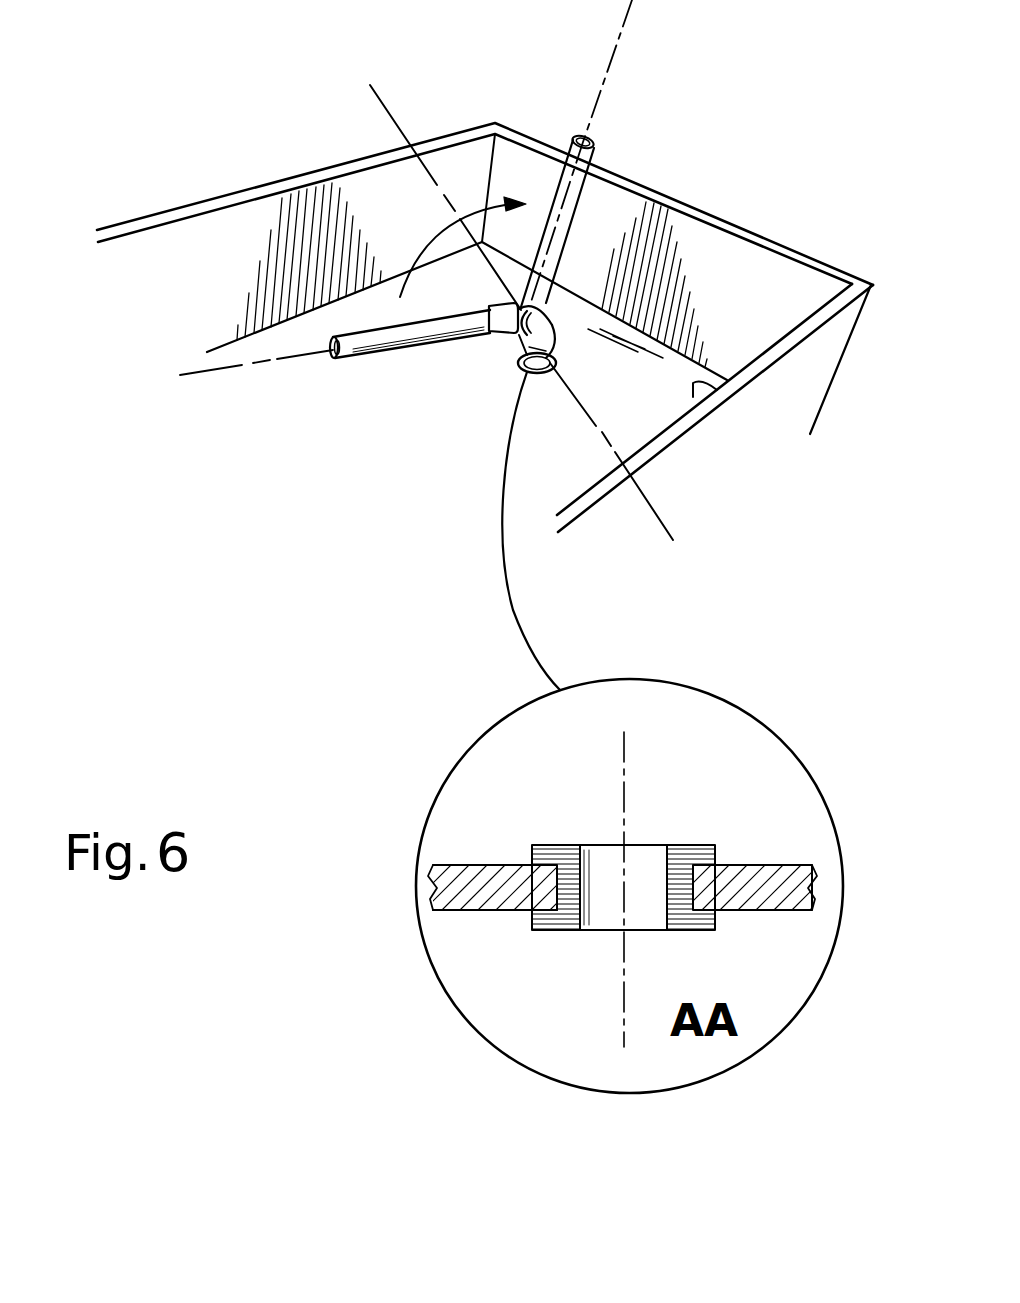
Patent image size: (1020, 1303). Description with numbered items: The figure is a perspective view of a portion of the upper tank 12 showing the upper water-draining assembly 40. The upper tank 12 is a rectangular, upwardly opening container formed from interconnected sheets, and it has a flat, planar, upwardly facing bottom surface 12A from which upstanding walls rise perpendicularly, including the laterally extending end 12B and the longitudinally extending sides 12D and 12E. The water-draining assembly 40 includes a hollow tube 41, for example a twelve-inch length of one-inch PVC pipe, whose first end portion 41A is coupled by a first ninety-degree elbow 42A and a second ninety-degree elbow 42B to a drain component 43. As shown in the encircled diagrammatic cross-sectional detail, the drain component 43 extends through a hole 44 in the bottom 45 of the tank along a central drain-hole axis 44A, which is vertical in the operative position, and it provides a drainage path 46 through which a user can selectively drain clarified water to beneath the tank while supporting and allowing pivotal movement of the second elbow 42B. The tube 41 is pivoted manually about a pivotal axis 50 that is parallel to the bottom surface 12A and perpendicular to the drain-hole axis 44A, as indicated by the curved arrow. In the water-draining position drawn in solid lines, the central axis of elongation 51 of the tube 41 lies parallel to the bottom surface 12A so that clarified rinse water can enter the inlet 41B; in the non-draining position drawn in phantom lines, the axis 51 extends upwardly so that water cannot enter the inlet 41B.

The upper tank 12 is at (227, 195).
The bottom surface 12A is at (553, 344).
The end 12B is at (766, 262).
The side 12D is at (137, 246).
The side 12E is at (588, 495).
The upper water-draining assembly 40 is at (331, 529).
The hollow tube 41 is at (408, 338).
The first end portion 41A is at (486, 330).
The inlet 41B is at (333, 357).
The first 90-degree elbow 42A is at (513, 340).
The second 90-degree elbow 42B is at (555, 357).
The drain component 43 is at (557, 364).
The hole 44 is at (553, 860).
The central drain-hole axis 44A is at (626, 752).
The bottom 45 is at (463, 906).
The drainage path 46 is at (643, 850).
The pivotal axis 50 is at (378, 88).
The central axis of elongation 51 is at (628, 15).